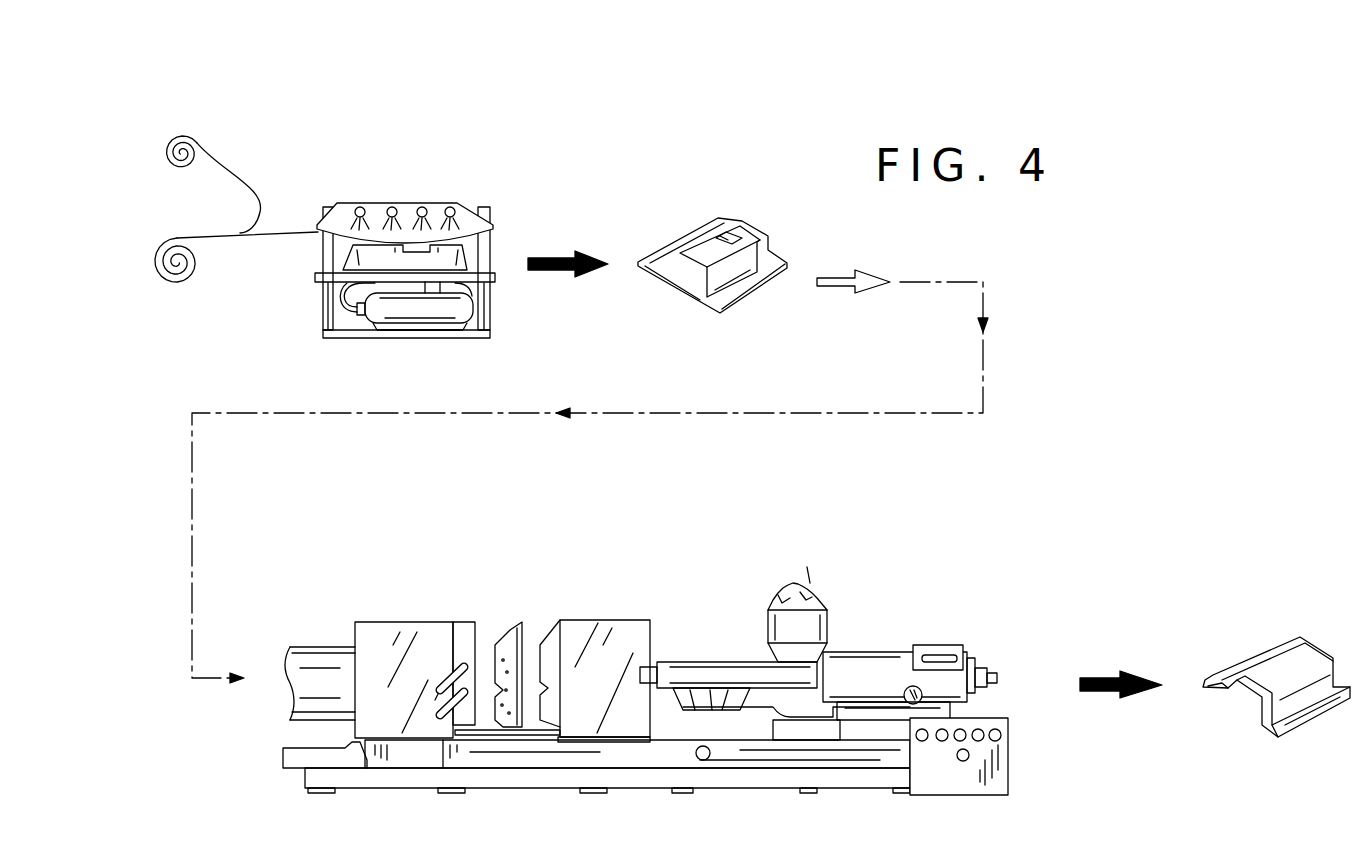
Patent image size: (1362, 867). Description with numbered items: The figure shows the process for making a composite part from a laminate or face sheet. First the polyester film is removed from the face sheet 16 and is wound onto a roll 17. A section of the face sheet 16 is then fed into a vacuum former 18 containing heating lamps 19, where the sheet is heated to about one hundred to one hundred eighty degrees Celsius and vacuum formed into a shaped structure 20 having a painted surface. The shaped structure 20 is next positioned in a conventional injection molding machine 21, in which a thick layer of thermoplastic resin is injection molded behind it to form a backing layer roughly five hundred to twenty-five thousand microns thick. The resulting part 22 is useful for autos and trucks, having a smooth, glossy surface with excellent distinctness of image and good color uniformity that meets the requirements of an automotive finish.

The face sheet 16 is at (185, 283).
The roll 17 is at (183, 134).
The vacuum former 18 is at (500, 331).
The heating lamps 19 is at (462, 202).
The shaped structure 20 is at (648, 270).
The injection molding machine 21 is at (427, 622).
The resulting part 22 is at (1240, 715).